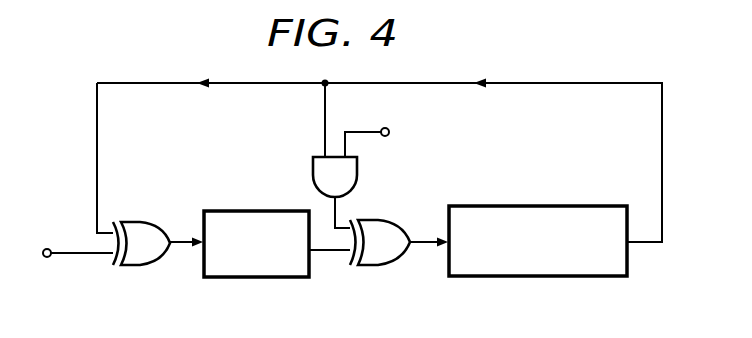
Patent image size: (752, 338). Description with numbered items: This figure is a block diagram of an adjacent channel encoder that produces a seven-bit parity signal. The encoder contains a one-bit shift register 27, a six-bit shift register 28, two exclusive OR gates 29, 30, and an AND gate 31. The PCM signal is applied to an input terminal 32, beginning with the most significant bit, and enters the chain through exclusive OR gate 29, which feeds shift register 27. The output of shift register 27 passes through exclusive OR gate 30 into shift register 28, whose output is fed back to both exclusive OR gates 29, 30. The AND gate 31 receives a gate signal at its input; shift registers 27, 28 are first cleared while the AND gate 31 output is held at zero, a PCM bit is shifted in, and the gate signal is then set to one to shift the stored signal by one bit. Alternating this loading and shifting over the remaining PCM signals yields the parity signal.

The 1-bit shift register 27 is at (268, 279).
The 6-bit shift register 28 is at (600, 278).
The exclusive OR gate 29 is at (148, 266).
The exclusive OR gate 30 is at (385, 266).
The AND gate 31 is at (357, 178).
The input terminal 32 is at (47, 257).